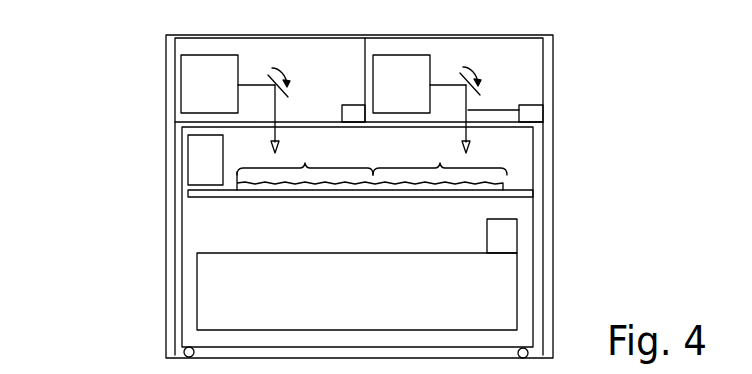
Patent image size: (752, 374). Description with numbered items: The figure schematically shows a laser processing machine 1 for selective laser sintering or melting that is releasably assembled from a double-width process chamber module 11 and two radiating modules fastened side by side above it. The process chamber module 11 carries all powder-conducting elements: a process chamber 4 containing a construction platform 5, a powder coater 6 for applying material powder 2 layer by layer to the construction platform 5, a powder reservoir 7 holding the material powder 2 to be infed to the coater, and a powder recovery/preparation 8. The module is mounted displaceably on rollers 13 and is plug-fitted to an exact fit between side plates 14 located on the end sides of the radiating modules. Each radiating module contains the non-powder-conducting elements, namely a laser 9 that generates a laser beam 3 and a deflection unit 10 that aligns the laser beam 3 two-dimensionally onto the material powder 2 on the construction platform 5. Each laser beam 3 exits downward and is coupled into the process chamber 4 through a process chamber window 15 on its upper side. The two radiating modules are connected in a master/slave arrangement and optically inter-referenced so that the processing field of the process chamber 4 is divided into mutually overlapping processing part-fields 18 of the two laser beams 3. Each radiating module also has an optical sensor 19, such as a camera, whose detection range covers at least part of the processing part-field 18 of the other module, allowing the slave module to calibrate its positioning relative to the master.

The laser processing machine 1 is at (93, 88).
The side plates 14 is at (172, 62).
The laser 9 is at (202, 90).
The deflection unit 10 is at (288, 96).
The optical sensor 19 is at (349, 105).
The laser beam 3 is at (519, 110).
The process chamber 4 is at (512, 148).
The powder coater 6 is at (203, 160).
The processing part-fields 18 is at (372, 157).
The material powder 2 is at (500, 182).
The construction platform 5 is at (523, 195).
The powder reservoir 7 is at (207, 290).
The powder recovery/preparation 8 is at (503, 234).
The rollers 13 is at (184, 352).
The process chamber module 11 is at (16, 368).
The process chamber window 15 is at (84, 368).